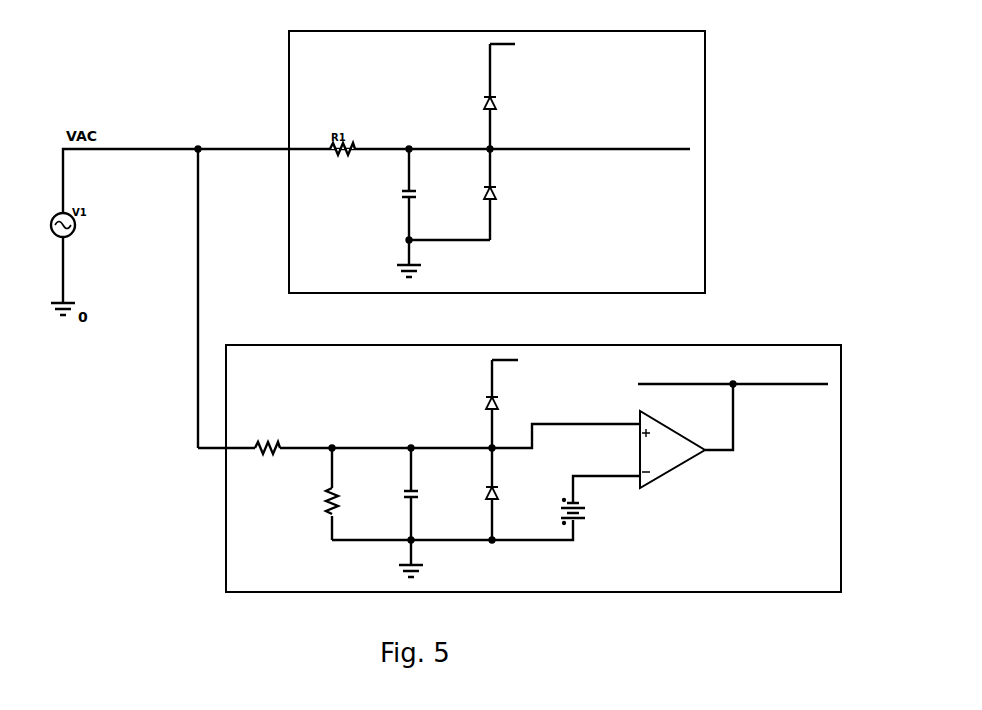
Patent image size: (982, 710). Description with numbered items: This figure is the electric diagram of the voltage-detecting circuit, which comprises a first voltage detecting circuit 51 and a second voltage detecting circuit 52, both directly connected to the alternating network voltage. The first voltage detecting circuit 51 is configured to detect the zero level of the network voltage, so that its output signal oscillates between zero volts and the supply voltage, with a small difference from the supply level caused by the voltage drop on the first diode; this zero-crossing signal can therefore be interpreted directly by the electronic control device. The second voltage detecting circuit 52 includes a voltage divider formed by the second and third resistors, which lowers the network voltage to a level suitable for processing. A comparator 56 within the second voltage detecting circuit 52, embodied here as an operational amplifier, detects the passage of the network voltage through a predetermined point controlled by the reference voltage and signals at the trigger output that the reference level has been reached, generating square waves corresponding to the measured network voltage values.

The first voltage detecting circuit 51 is at (497, 162).
The second voltage detecting circuit 52 is at (519, 469).
The comparator 56 is at (668, 465).